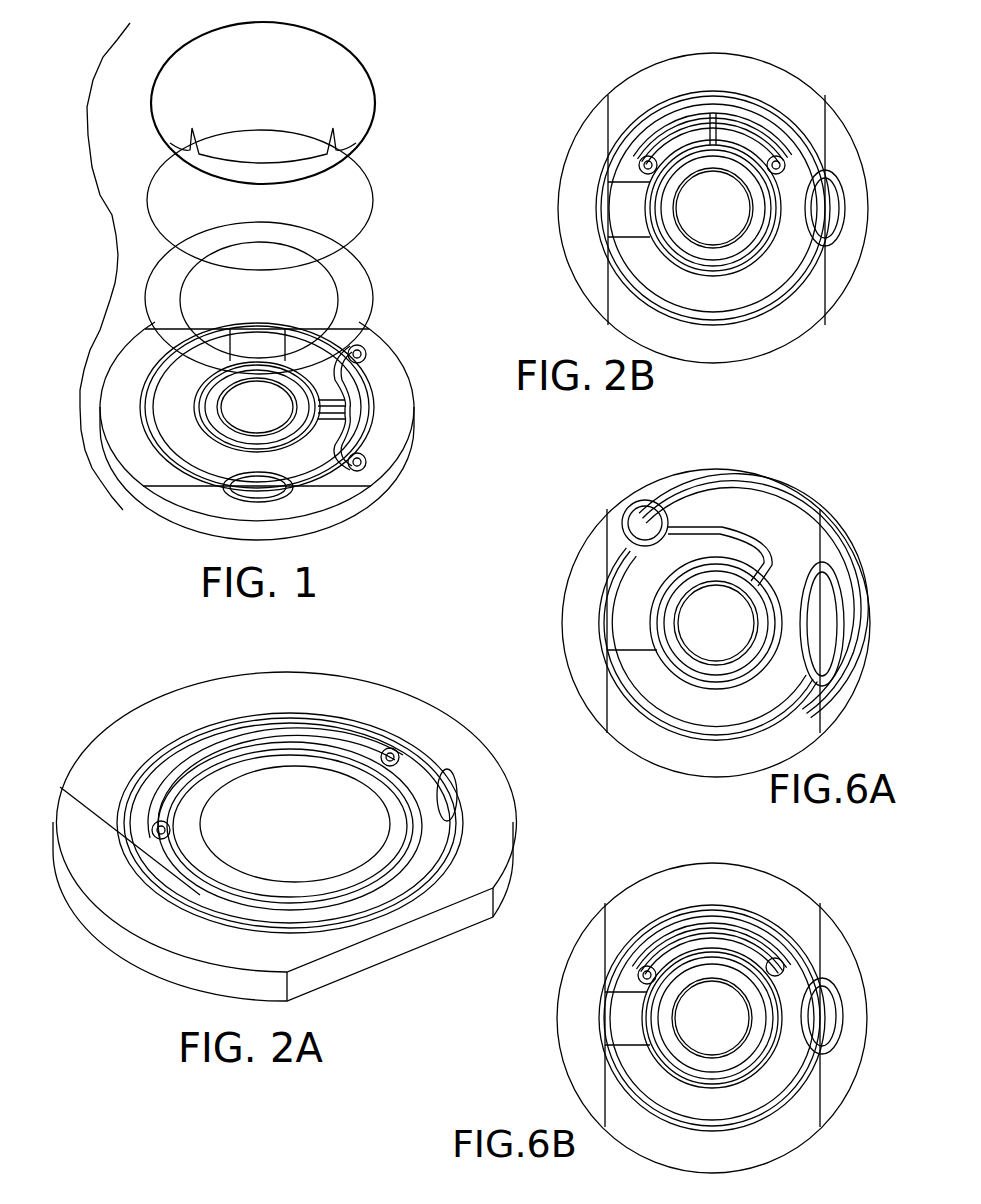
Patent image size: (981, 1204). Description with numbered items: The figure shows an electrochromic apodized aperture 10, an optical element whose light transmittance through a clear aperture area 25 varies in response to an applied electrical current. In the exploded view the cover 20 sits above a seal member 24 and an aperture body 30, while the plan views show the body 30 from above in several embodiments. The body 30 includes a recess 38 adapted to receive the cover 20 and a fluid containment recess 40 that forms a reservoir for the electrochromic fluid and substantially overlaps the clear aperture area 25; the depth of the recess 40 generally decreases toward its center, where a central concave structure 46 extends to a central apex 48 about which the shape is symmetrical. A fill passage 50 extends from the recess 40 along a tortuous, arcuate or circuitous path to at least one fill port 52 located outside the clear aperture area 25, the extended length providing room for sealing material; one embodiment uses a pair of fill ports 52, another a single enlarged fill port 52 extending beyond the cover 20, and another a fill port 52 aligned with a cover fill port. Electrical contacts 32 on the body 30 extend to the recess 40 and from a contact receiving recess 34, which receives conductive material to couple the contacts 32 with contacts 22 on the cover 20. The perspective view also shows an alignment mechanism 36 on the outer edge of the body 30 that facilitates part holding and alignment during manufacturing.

In FIG. 1, the electrochromic apodized aperture 10 is at (117, 257).
In FIG. 2A, the electrochromic apodized aperture 10 is at (110, 677).
In FIG. 1, the cover 20 is at (352, 82).
In FIG. 2A, the cover 20 is at (327, 912).
In FIG. 1, the contacts 22 is at (350, 200).
In FIG. 6B, the contacts 22 is at (820, 1060).
In FIG. 1, the seal member 24 is at (352, 290).
In FIG. 2A, the seal member 24 is at (417, 833).
In FIG. 2B, the clear aperture area 25 is at (725, 275).
In FIG. 6A, the clear aperture area 25 is at (773, 663).
In FIG. 6B, the clear aperture area 25 is at (748, 1077).
In FIG. 1, the aperture body 30 is at (397, 405).
In FIG. 2A, the aperture body 30 is at (210, 697).
In FIG. 2B, the aperture body 30 is at (645, 92).
In FIG. 6A, the aperture body 30 is at (743, 763).
In FIG. 6B, the aperture body 30 is at (745, 888).
In FIG. 1, the electrical contacts 32 is at (290, 517).
In FIG. 2A, the electrical contacts 32 is at (368, 690).
In FIG. 2B, the electrical contacts 32 is at (837, 130).
In FIG. 6A, the electrical contacts 32 is at (587, 683).
In FIG. 6B, the electrical contacts 32 is at (830, 937).
In FIG. 2A, the contact receiving recess 34 is at (435, 762).
In FIG. 2B, the contact receiving recess 34 is at (825, 223).
In FIG. 6A, the contact receiving recess 34 is at (822, 603).
In FIG. 6B, the contact receiving recess 34 is at (822, 1025).
In FIG. 2A, the alignment mechanism 36 is at (425, 935).
In FIG. 2B, the recess 38 is at (767, 312).
In FIG. 6A, the recess 38 is at (697, 733).
In FIG. 6B, the recess 38 is at (793, 1090).
In FIG. 2A, the recess 40 is at (262, 853).
In FIG. 2B, the recess 40 is at (785, 187).
In FIG. 6A, the recess 40 is at (760, 601).
In FIG. 6B, the recess 40 is at (695, 1059).
In FIG. 1, the central concave structure 46 is at (257, 417).
In FIG. 2B, the central concave structure 46 is at (713, 235).
In FIG. 6A, the central concave structure 46 is at (693, 650).
In FIG. 6B, the central concave structure 46 is at (650, 1035).
In FIG. 6A, the central apex 48 is at (720, 623).
In FIG. 6B, the central apex 48 is at (713, 1022).
In FIG. 1, the fill passage 50 is at (365, 380).
In FIG. 2B, the fill passage 50 is at (760, 132).
In FIG. 6A, the fill passage 50 is at (727, 530).
In FIG. 6B, the fill passage 50 is at (682, 935).
In FIG. 1, the fill port 52 is at (362, 353).
In FIG. 2A, the fill port 52 is at (380, 753).
In FIG. 2B, the fill port 52 is at (640, 156).
In FIG. 6A, the fill port 52 is at (643, 525).
In FIG. 6B, the fill port 52 is at (640, 967).